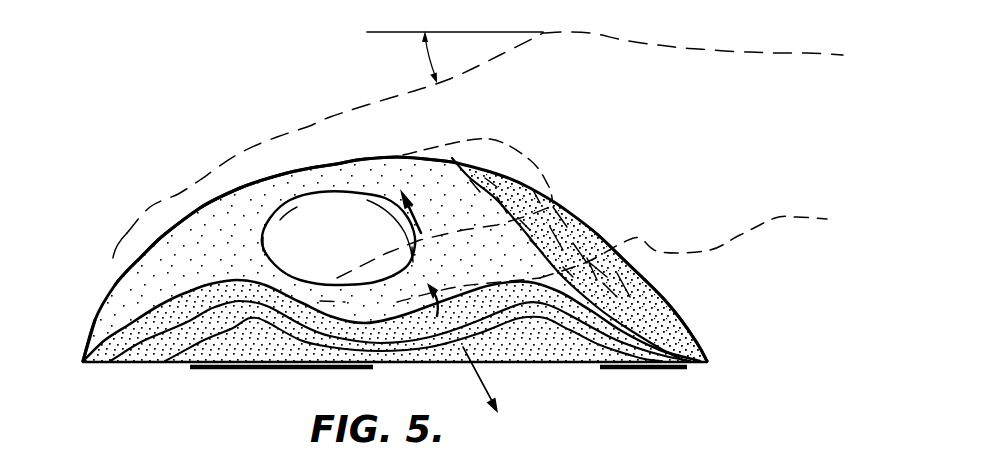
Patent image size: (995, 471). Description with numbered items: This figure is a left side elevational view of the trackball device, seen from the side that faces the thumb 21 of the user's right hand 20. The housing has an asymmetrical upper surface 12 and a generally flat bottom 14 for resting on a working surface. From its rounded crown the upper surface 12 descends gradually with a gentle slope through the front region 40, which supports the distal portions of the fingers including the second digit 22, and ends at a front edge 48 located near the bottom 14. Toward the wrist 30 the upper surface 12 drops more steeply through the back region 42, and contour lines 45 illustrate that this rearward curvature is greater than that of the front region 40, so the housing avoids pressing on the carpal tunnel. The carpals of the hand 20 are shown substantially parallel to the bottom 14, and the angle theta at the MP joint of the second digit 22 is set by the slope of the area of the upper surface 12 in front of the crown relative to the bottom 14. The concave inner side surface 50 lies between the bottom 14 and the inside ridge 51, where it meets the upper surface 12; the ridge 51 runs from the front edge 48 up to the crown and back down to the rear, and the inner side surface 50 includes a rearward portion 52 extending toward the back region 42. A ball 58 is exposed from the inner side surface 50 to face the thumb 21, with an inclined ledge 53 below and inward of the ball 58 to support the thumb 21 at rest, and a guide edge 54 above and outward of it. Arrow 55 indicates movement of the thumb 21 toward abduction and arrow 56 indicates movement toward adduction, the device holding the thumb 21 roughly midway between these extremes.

The upper surface 12 is at (455, 162).
The bottom 14 is at (170, 366).
The right hand 20 is at (771, 66).
The thumb 21 is at (391, 320).
The second digit 22 is at (180, 197).
The wrist 30 is at (808, 180).
The front region 40 is at (100, 305).
The back region 42 is at (663, 279).
The contour lines 45 is at (670, 303).
The front edge 48 is at (82, 361).
The inner side surface 50 is at (222, 240).
The inside ridge 51 is at (337, 160).
The rearward portion 52 is at (596, 318).
The ledge 53 is at (430, 298).
The guide edge 54 is at (300, 185).
The arrow 55 is at (480, 384).
The arrow 56 is at (414, 218).
The ball 58 is at (340, 250).